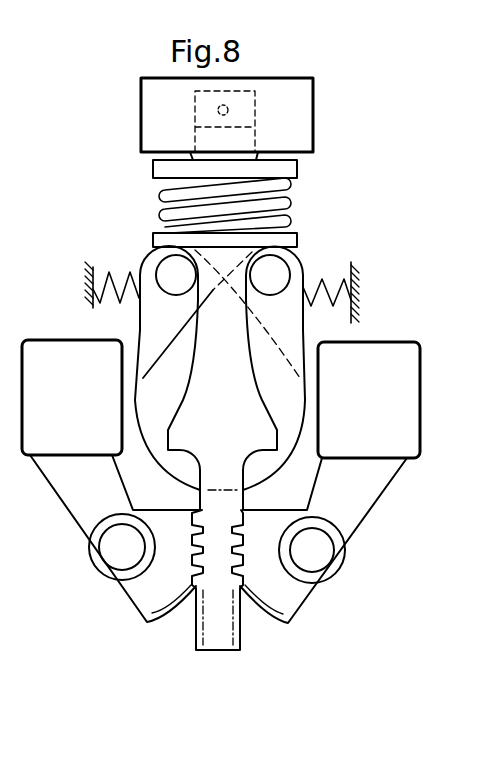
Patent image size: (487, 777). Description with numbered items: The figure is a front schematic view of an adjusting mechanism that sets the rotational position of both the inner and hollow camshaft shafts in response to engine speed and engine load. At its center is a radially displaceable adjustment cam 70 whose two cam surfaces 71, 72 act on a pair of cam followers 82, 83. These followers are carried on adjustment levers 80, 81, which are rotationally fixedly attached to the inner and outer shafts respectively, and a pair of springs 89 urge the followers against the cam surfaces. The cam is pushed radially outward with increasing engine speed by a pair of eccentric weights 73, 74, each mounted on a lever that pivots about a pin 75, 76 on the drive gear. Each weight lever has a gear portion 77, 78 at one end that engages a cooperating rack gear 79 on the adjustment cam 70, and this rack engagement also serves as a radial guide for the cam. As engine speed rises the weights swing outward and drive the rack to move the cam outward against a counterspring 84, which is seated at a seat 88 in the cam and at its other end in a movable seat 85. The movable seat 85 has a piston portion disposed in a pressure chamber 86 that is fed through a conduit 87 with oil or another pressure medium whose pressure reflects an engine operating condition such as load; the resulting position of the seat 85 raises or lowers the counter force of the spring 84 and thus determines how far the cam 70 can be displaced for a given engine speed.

The adjustment cam 70 is at (231, 348).
The cam surface 71 is at (195, 355).
The cam surface 72 is at (250, 356).
The eccentric weight 73 is at (52, 350).
The eccentric weight 74 is at (405, 383).
The pin 75 is at (112, 552).
The pin 76 is at (318, 557).
The gear portion 77 is at (170, 612).
The gear portion 78 is at (272, 612).
The rack gear 79 is at (215, 635).
The adjustment lever 80 is at (139, 313).
The adjustment lever 81 is at (306, 363).
The cam follower 82 is at (168, 270).
The cam follower 83 is at (279, 277).
The counterspring 84 is at (278, 188).
The movable seat 85 is at (287, 170).
The pressure chamber 86 is at (248, 108).
The conduit 87 is at (216, 111).
The spring seat 88 is at (285, 240).
The spring 89 is at (330, 283).